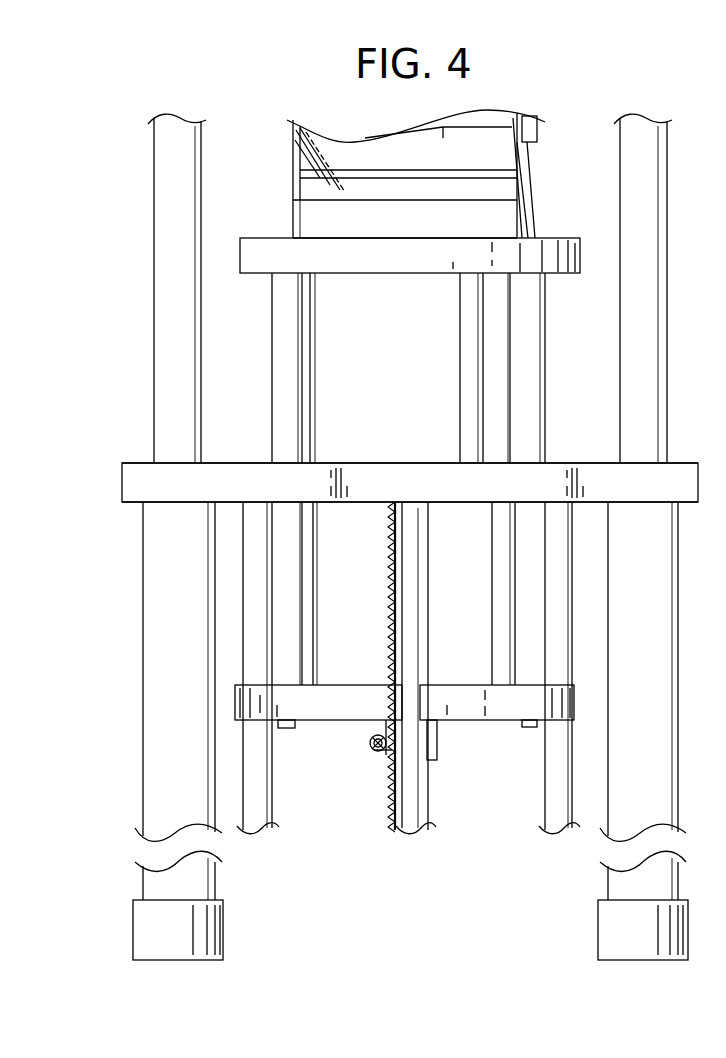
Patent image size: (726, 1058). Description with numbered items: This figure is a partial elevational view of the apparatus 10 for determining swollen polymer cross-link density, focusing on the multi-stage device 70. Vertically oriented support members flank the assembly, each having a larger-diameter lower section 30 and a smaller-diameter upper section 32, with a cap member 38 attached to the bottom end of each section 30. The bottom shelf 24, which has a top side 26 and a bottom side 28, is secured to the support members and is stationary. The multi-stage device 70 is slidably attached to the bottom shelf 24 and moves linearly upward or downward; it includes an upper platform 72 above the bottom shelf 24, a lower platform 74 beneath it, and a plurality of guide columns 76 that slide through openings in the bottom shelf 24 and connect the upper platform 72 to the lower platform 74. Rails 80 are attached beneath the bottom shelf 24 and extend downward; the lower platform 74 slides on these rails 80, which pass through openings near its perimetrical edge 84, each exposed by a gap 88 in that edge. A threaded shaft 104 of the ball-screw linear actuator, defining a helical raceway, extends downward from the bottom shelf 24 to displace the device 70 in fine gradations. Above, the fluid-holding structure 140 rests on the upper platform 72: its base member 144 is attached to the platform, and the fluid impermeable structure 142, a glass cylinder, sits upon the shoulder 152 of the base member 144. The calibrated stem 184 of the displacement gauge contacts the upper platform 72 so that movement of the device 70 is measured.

The apparatus 10 is at (597, 97).
The fluid-holding structure 140 is at (349, 174).
The fluid impermeable structure 142 is at (293, 140).
The base member 144 is at (303, 212).
The shoulder 152 is at (376, 204).
The calibrated stem 184 is at (532, 198).
The section of support member 32 is at (158, 337).
The upper platform 72 is at (390, 275).
The guide columns 76 is at (278, 352).
The multi-stage device 70 is at (408, 368).
The top side of bottom shelf 26 is at (140, 475).
The bottom shelf 24 is at (381, 489).
The bottom side of bottom shelf 28 is at (590, 505).
The rails 80 is at (248, 542).
The threaded shaft 104 is at (390, 545).
The section of support member 30 is at (152, 657).
The lower platform 74 is at (345, 715).
The perimetrical edge 84 is at (468, 717).
The gaps 88 is at (386, 754).
The cap member 38 is at (222, 938).